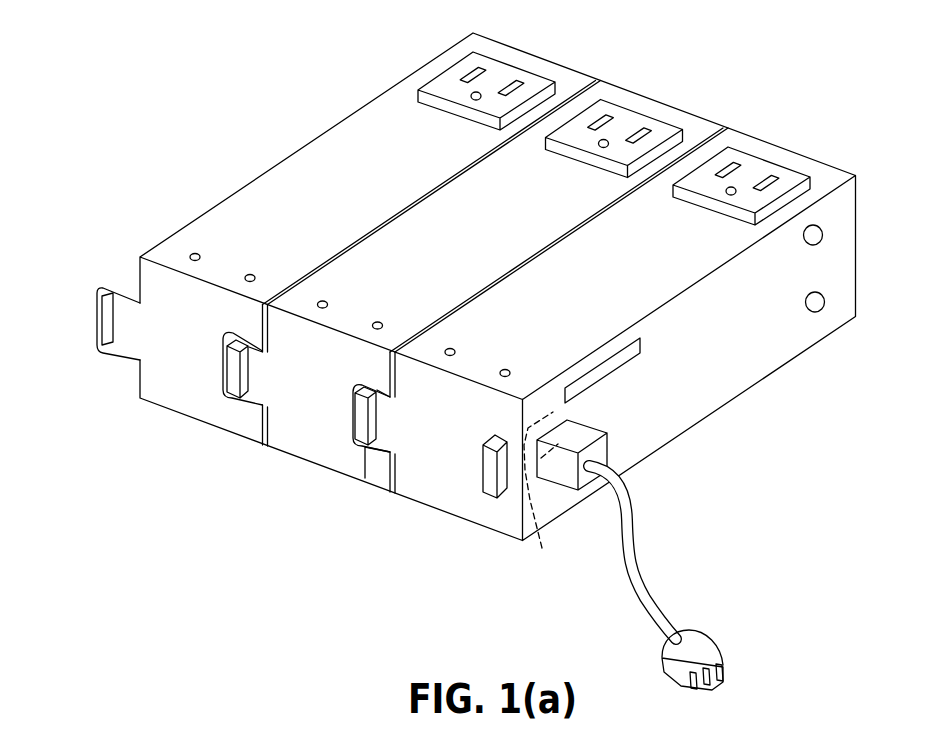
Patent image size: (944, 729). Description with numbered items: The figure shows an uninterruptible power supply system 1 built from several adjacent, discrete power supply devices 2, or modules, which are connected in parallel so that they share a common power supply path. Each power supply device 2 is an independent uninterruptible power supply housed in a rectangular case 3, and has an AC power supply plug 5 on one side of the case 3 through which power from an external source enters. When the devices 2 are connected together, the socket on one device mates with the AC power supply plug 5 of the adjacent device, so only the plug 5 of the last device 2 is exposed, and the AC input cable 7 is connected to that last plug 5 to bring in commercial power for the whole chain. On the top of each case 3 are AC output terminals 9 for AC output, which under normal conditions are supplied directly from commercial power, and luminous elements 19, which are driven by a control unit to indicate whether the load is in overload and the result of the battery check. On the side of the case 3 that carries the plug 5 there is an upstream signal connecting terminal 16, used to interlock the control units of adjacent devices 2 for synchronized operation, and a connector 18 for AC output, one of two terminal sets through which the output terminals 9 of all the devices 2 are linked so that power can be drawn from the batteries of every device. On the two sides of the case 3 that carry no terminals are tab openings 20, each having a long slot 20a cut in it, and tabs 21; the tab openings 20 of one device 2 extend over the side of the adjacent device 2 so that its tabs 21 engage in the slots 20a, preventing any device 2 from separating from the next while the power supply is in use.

The uninterruptible power supply system 1 is at (120, 220).
The power supply device 2 is at (178, 397).
The rectangular case 3 is at (316, 146).
The AC power supply plug 5 is at (565, 495).
The AC input cable 7 is at (633, 567).
The AC output terminal 9 is at (447, 88).
The upstream signal connecting terminal 16 is at (823, 233).
The connector for AC output 18 is at (825, 300).
The luminous element 19 is at (192, 255).
The tab opening 20 is at (104, 356).
The long slot 20a is at (105, 320).
The tab 21 is at (360, 437).